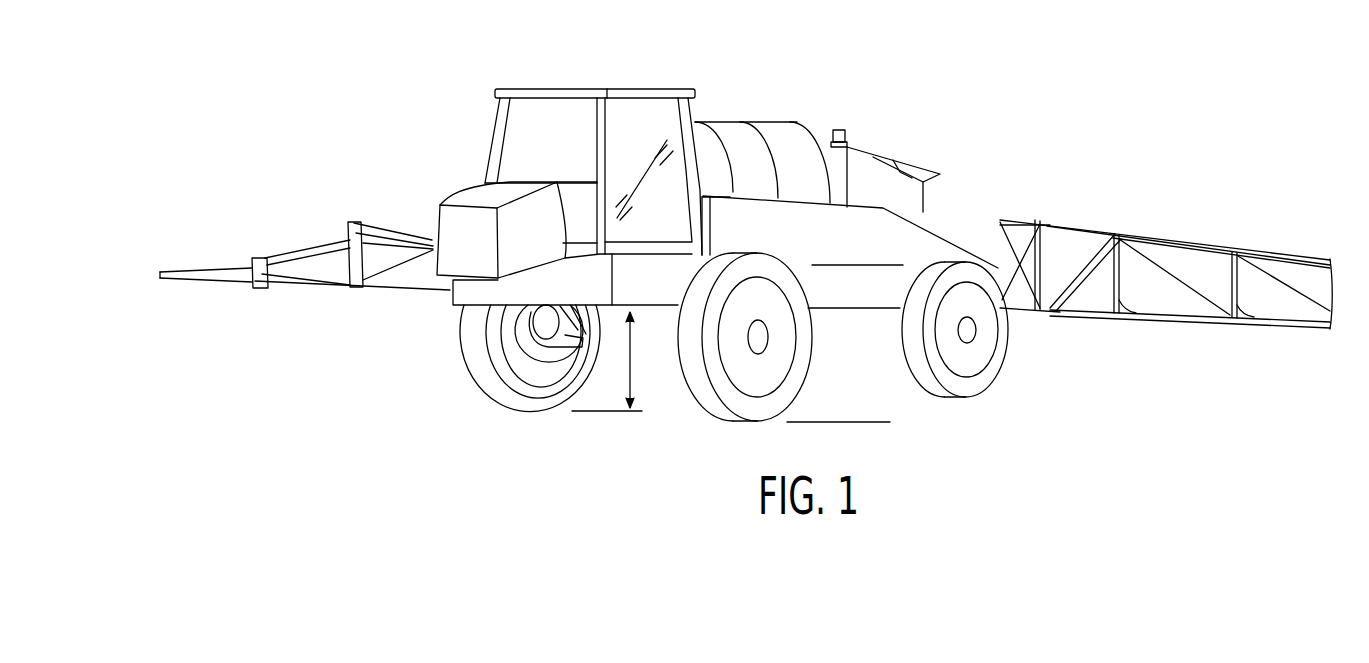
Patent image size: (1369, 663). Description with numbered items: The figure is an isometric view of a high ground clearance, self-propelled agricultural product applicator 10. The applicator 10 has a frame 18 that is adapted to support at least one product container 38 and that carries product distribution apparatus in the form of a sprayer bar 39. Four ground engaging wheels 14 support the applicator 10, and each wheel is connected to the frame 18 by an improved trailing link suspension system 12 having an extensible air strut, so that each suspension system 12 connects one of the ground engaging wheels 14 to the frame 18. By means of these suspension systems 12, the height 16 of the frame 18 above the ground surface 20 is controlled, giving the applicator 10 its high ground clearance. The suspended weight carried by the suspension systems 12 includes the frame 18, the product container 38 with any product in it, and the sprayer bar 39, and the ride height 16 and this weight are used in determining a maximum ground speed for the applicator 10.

The agricultural product applicator 10 is at (456, 96).
The suspension system 12 is at (543, 362).
The ground engaging wheels 14 is at (485, 378).
The height 16 is at (630, 357).
The frame 18 is at (858, 310).
The ground surface 20 is at (890, 418).
The product container 38 is at (693, 122).
The sprayer bar 39 is at (1158, 236).